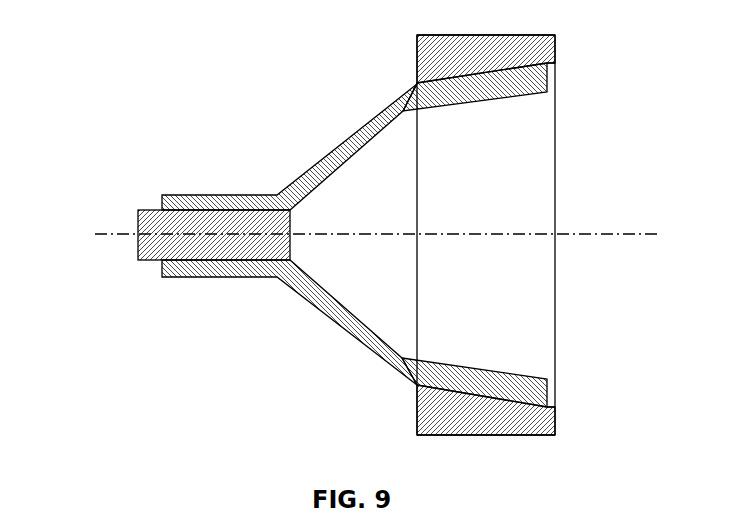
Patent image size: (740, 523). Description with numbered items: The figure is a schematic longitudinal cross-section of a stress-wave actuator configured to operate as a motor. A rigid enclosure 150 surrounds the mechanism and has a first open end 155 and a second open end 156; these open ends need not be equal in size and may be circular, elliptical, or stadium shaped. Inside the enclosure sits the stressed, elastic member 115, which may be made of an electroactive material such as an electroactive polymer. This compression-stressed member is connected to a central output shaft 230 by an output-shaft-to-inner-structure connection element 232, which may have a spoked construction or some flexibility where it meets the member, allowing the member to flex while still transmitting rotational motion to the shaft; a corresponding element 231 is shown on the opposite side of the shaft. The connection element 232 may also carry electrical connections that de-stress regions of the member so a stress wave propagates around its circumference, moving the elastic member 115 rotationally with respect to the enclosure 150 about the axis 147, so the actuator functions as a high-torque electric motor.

The rigid enclosure 150 is at (417, 62).
The stressed, elastic member 115 is at (546, 79).
The axis of rotation 147 is at (613, 233).
The second open end 156 is at (557, 323).
The first open end 155 is at (416, 322).
The output shaft 230 is at (138, 226).
The lower hub flange 231 is at (228, 278).
The output-shaft-to-inner-structure connection element 232 is at (342, 143).